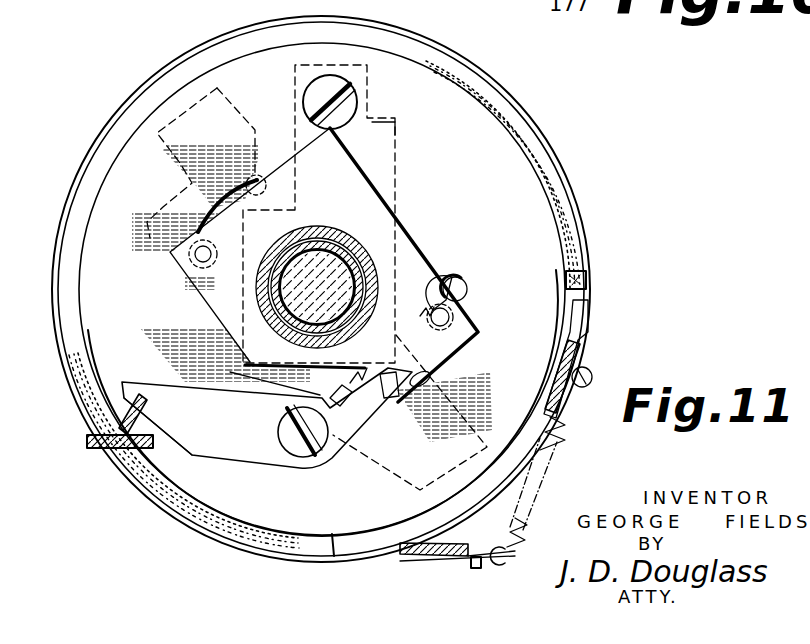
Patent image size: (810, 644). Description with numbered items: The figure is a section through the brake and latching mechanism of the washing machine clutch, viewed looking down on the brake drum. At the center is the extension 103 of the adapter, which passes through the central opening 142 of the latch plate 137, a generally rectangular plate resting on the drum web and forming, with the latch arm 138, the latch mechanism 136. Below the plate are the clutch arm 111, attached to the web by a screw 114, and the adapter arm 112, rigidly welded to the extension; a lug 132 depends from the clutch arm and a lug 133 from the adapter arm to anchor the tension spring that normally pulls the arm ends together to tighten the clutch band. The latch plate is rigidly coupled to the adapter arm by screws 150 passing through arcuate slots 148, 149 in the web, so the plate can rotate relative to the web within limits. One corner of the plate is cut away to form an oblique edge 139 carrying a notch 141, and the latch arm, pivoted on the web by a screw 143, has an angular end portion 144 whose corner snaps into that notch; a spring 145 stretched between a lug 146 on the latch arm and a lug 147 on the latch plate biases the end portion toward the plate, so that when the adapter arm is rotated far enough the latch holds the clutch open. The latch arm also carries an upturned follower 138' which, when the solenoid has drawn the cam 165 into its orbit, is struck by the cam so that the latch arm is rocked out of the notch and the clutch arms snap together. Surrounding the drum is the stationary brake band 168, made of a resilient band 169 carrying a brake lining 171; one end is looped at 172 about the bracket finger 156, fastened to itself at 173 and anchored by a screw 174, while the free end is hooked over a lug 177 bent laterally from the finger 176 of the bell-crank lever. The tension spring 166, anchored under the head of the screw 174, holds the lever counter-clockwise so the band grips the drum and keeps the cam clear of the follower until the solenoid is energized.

The extension 103 is at (372, 252).
The clutch arm 111 is at (397, 160).
The adapter arm 112 is at (152, 238).
The screw 114 is at (328, 86).
The lug 132 is at (397, 118).
The lug 133 is at (177, 172).
The latch mechanism 136 is at (207, 339).
The latch plate 137 is at (215, 296).
The latch arm 138 is at (158, 397).
The follower 138' is at (77, 407).
The oblique edge 139 is at (243, 373).
The notch 141 is at (440, 442).
The central opening 142 is at (315, 228).
The screw 143 is at (297, 458).
The end portion 144 is at (425, 385).
The spring 145 is at (433, 300).
The lug 146 is at (290, 412).
The lug 147 is at (465, 284).
The arcuate slot 148 is at (255, 178).
The arcuate slot 149 is at (432, 374).
The screws 150 is at (195, 259).
The finger 156 is at (586, 346).
The cam 165 is at (95, 449).
The tension spring 166 is at (552, 468).
The stationary brake band 168 is at (562, 150).
The band 169 is at (572, 206).
The brake lining 171 is at (571, 243).
The looped portion 172 is at (552, 412).
The fastened end 173 is at (588, 290).
The screw 174 is at (588, 366).
The finger 176 is at (446, 545).
The lug 177 is at (476, 570).